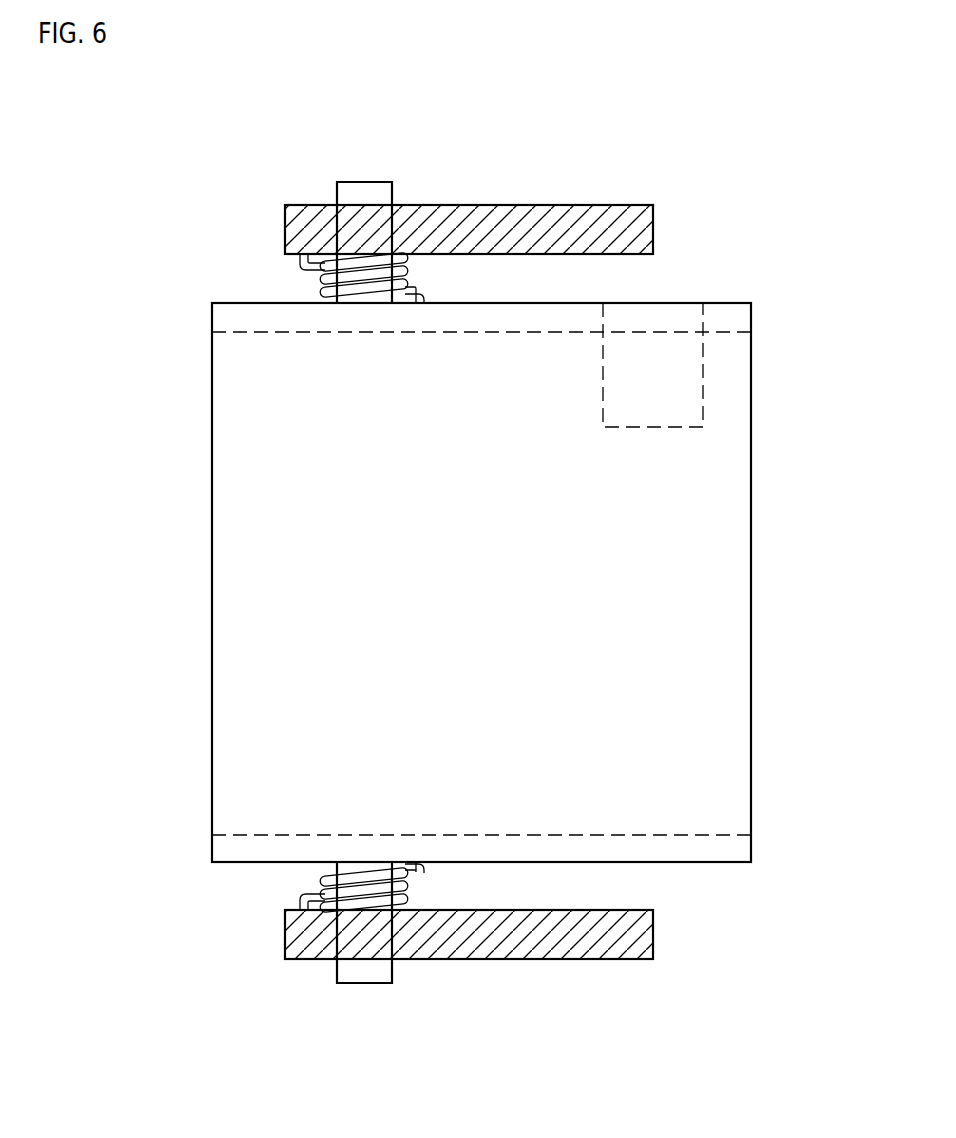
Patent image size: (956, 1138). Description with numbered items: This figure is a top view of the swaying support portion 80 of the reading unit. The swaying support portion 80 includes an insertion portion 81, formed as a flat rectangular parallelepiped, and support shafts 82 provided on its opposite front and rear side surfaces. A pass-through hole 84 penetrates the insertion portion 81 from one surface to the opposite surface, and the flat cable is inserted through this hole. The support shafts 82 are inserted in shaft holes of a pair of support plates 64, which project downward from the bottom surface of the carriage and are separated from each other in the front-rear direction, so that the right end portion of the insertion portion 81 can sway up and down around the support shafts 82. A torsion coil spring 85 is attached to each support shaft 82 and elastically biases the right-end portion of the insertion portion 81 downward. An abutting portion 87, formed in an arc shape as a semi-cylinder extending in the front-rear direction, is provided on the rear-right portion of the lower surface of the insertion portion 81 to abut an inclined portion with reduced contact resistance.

The swaying support portion 80 is at (158, 365).
The insertion portion 81 is at (212, 500).
The support shaft 82 is at (375, 181).
The support plate 64 is at (557, 205).
The torsion coil spring 85 is at (323, 282).
The abutting portion 87 is at (703, 365).
The pass-through hole 84 is at (676, 835).